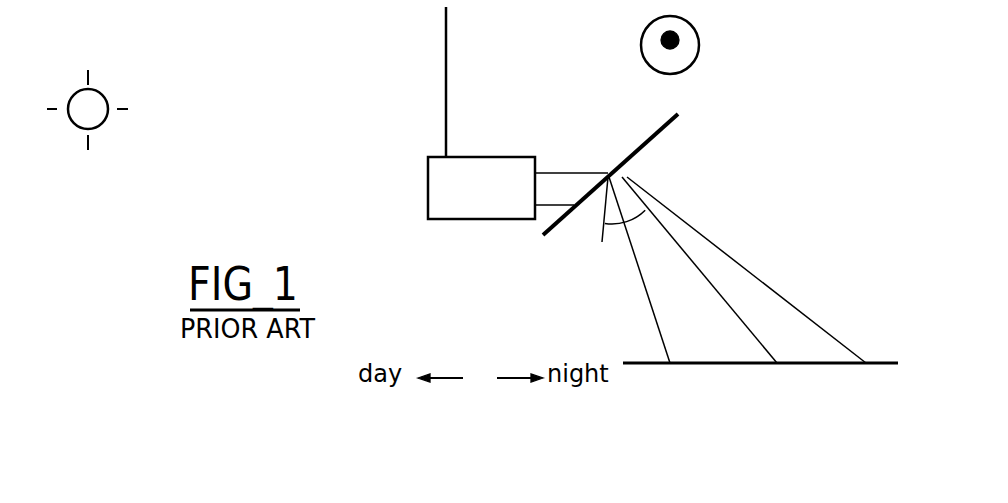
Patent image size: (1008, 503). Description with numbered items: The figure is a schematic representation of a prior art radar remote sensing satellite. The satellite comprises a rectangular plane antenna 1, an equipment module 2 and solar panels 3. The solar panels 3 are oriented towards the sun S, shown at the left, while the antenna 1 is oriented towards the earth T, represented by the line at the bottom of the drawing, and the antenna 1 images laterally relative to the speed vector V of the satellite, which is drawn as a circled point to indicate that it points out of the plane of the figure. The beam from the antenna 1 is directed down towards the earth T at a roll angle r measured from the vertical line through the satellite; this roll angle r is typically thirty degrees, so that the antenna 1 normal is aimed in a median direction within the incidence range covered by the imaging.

The rectangular plane antenna 1 is at (659, 146).
The equipment module 2 is at (461, 229).
The solar panels 3 is at (434, 37).
The sun S is at (126, 85).
The speed vector of the satellite V is at (645, 45).
The earth T is at (889, 350).
The roll angle r is at (734, 270).